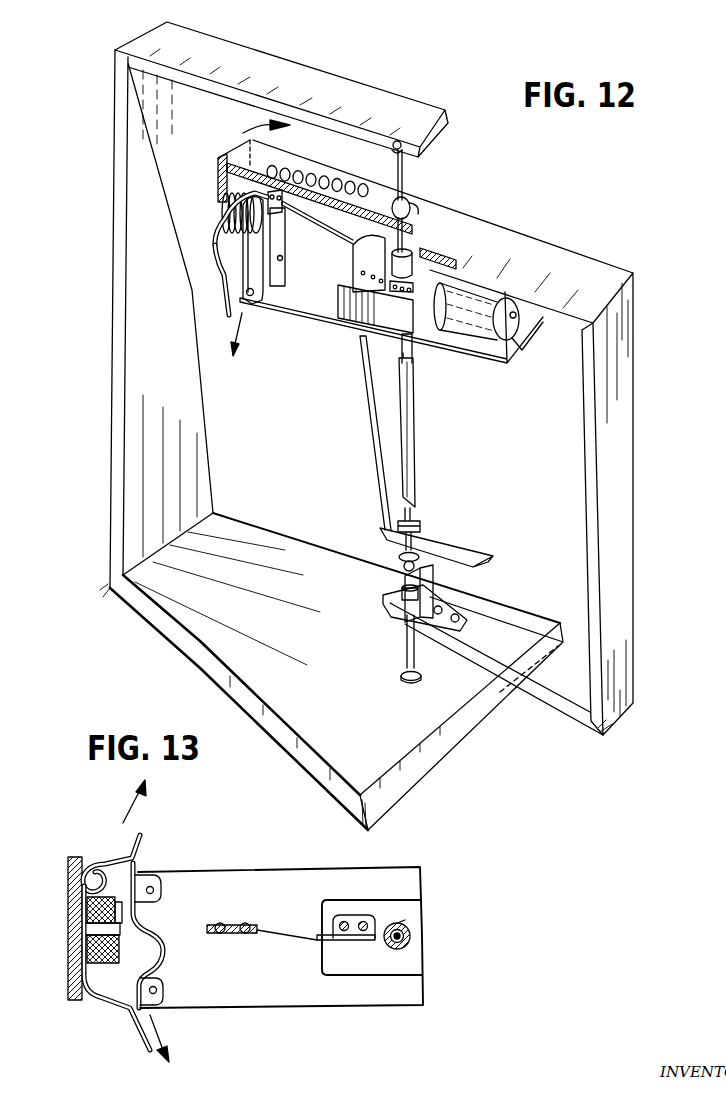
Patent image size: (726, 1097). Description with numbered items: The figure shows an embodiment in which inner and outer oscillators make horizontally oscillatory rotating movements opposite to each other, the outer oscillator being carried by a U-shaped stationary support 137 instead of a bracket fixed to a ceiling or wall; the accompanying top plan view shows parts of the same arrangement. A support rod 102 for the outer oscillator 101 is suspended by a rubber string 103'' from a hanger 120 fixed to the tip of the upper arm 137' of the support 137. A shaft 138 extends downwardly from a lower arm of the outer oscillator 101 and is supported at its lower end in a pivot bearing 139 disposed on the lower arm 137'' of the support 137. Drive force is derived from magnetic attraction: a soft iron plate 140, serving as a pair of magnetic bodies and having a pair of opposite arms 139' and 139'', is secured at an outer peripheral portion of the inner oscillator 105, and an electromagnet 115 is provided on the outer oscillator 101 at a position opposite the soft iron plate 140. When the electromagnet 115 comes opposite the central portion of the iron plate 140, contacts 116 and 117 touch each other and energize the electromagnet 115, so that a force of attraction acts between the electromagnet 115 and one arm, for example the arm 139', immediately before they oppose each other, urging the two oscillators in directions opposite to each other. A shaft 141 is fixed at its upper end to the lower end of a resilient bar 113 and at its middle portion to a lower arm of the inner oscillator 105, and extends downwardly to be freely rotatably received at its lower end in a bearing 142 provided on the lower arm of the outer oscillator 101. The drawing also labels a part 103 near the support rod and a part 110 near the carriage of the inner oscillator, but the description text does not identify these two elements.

In FIG. 12, the outer oscillator 101 is at (593, 263).
In FIG. 13, the outer oscillator 101 is at (68, 926).
In FIG. 12, the support rod 102 is at (410, 205).
In FIG. 13, the support rod 102 is at (403, 925).
In FIG. 13, the pivot pin 103 is at (436, 936).
In FIG. 12, the rubber string 103'' is at (443, 198).
In FIG. 12, the inner oscillator 105 is at (298, 305).
In FIG. 13, the inner oscillator 105 is at (280, 870).
In FIG. 12, the motor 110 is at (477, 335).
In FIG. 12, the resilient bar 113 is at (418, 446).
In FIG. 12, the electromagnet 115 is at (238, 228).
In FIG. 13, the electromagnet 115 is at (107, 888).
In FIG. 12, the contact 116 is at (413, 255).
In FIG. 13, the contact 116 is at (338, 943).
In FIG. 12, the contact 117 is at (350, 240).
In FIG. 13, the contact 117 is at (283, 938).
In FIG. 12, the hanger 120 is at (397, 140).
In FIG. 12, the U-shaped stationary support 137 is at (132, 324).
In FIG. 12, the upper arm 137' is at (281, 82).
In FIG. 12, the lower arm 137'' is at (336, 671).
In FIG. 12, the shaft 138 is at (420, 653).
In FIG. 12, the pivot bearing 139 is at (377, 653).
In FIG. 12, the arm 139' is at (191, 300).
In FIG. 13, the arm 139' is at (155, 974).
In FIG. 12, the arm 139'' is at (203, 219).
In FIG. 13, the arm 139'' is at (140, 836).
In FIG. 12, the soft iron plate 140 is at (263, 277).
In FIG. 13, the soft iron plate 140 is at (160, 923).
In FIG. 12, the shaft 141 is at (383, 540).
In FIG. 12, the bearing 142 is at (400, 570).